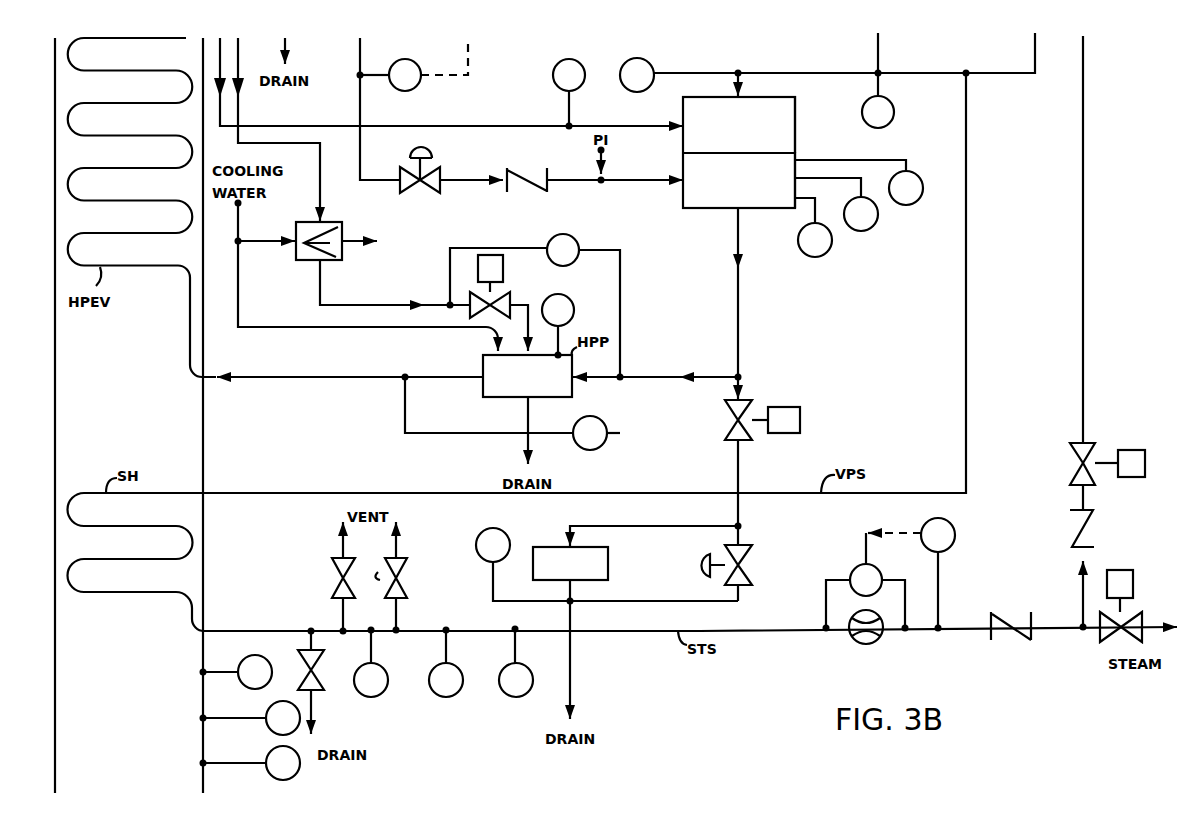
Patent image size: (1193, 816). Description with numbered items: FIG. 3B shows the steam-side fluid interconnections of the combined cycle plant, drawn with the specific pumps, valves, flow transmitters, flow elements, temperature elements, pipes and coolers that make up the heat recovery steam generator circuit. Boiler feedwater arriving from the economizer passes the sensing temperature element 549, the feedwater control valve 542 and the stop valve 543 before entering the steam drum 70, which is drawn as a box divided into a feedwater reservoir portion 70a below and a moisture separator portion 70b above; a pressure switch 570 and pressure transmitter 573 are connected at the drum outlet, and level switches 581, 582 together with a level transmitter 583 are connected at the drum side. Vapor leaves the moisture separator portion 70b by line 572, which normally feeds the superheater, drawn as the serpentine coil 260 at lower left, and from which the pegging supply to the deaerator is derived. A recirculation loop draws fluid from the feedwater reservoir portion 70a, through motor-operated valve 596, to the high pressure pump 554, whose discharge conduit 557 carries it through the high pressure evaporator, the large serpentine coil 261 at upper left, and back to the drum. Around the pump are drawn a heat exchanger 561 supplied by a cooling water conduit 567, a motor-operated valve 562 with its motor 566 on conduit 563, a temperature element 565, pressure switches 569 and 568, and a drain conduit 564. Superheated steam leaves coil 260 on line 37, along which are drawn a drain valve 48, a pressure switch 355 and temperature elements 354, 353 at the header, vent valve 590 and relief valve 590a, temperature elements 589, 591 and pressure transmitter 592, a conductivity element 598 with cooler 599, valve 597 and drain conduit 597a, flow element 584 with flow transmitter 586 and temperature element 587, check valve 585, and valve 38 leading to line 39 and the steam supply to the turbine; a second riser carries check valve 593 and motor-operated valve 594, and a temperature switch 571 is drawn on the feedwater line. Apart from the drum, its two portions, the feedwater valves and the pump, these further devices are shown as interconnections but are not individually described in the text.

The temperature element 549 is at (416, 88).
The feedwater control valve 542 is at (410, 170).
The stop valve 543 is at (528, 172).
The temperature switch 571 is at (555, 70).
The pressure switch 570 is at (650, 63).
The line 572 is at (768, 73).
The steam drum 70 is at (692, 209).
The feedwater reservoir portion 70a is at (760, 209).
The moisture separator portion 70b is at (796, 96).
The pressure transmitter 573 is at (894, 106).
The level switch 581 is at (922, 182).
The level switch 582 is at (878, 212).
The level transmitter 583 is at (832, 238).
The heat exchanger 561 is at (343, 228).
The cooling water conduit 567 is at (240, 255).
The valve motor 566 is at (474, 255).
The pressure switch 569 is at (575, 238).
The motor operated valve 562 is at (472, 296).
The temperature element 565 is at (553, 283).
The conduit 563 is at (527, 320).
The conduit 557 is at (223, 372).
The pump 554 is at (483, 396).
The drain conduit 564 is at (523, 443).
The pressure switch 568 is at (607, 440).
The motor operated valve 596 is at (725, 410).
The motor operated valve 594 is at (1074, 452).
The check valve 593 is at (1076, 532).
The conductivity element 598 is at (495, 528).
The cooler 599 is at (608, 560).
The valve 597 is at (752, 552).
The drain conduit 597a is at (572, 672).
The temperature element 587 is at (930, 520).
The flow transmitter 586 is at (855, 568).
The flow meter 584 is at (852, 640).
The check valve 585 is at (1016, 616).
The line 37 is at (259, 630).
The valve 38 is at (1105, 638).
The line 39 is at (1154, 636).
The vent valve 590 is at (335, 570).
The relief valve 590a is at (398, 580).
The drain valve 48 is at (300, 662).
The pressure switch 355 is at (251, 690).
The temperature element 354 is at (268, 730).
The temperature element 353 is at (268, 776).
The temperature element 589 is at (371, 697).
The temperature element 591 is at (446, 697).
The pressure transmitter 592 is at (516, 697).
The high pressure evaporator 261 is at (135, 268).
The superheater 260 is at (112, 594).